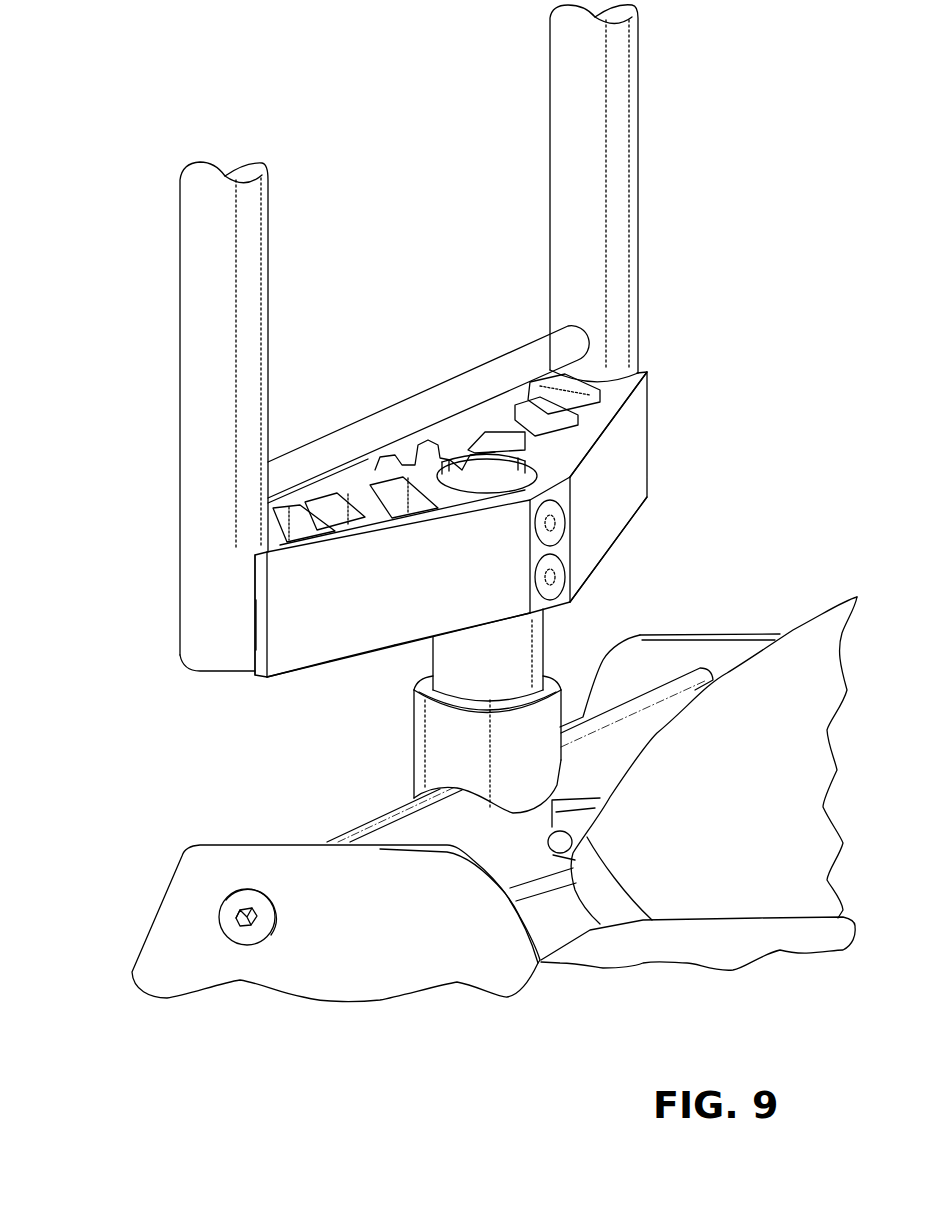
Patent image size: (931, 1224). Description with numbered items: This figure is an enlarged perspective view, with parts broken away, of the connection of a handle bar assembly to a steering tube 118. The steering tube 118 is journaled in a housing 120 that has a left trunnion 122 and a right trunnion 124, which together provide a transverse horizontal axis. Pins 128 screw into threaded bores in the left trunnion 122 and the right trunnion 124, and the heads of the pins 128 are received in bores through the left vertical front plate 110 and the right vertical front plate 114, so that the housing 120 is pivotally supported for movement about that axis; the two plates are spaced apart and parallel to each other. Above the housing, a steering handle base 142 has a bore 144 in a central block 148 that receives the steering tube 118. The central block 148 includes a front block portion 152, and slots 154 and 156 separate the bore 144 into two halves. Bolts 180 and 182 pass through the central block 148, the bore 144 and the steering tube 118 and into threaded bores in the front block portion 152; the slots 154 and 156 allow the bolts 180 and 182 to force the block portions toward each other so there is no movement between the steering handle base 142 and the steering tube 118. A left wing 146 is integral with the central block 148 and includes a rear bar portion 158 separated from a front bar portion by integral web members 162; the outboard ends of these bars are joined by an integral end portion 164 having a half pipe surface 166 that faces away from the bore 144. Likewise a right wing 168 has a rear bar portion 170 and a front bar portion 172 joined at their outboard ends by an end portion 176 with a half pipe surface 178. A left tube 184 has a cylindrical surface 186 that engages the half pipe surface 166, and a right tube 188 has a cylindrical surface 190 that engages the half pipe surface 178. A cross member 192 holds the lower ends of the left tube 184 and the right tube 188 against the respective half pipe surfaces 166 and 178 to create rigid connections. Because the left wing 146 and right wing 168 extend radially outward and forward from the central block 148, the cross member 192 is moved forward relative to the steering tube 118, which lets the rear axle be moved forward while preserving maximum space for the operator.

The left vertical front plate 110 is at (163, 923).
The right vertical front plate 114 is at (723, 632).
The steering tube 118 is at (480, 648).
The housing 120 is at (550, 680).
The left trunnion 122 is at (397, 825).
The right trunnion 124 is at (683, 783).
The pins 128 is at (253, 937).
The steering handle base 142 is at (293, 655).
The bore 144 is at (445, 445).
The left wing 146 is at (373, 645).
The central block 148 is at (550, 482).
The front block portion 152 is at (420, 480).
The slot 154 is at (452, 488).
The slot 156 is at (490, 453).
The rear bar portion 158 is at (327, 657).
The web members 162 is at (370, 510).
The end portion 164 is at (258, 628).
The half pipe surface 166 is at (255, 552).
The right wing 168 is at (635, 445).
The rear bar portion 170 is at (640, 510).
The front bar portion 172 is at (455, 432).
The end portion 176 is at (607, 397).
The half pipe surface 178 is at (590, 378).
The bolt 180 is at (560, 580).
The bolt 182 is at (560, 525).
The left tube 184 is at (195, 215).
The cylindrical surface 186 is at (258, 228).
The right tube 188 is at (640, 122).
The cylindrical surface 190 is at (620, 165).
The cross member 192 is at (545, 340).